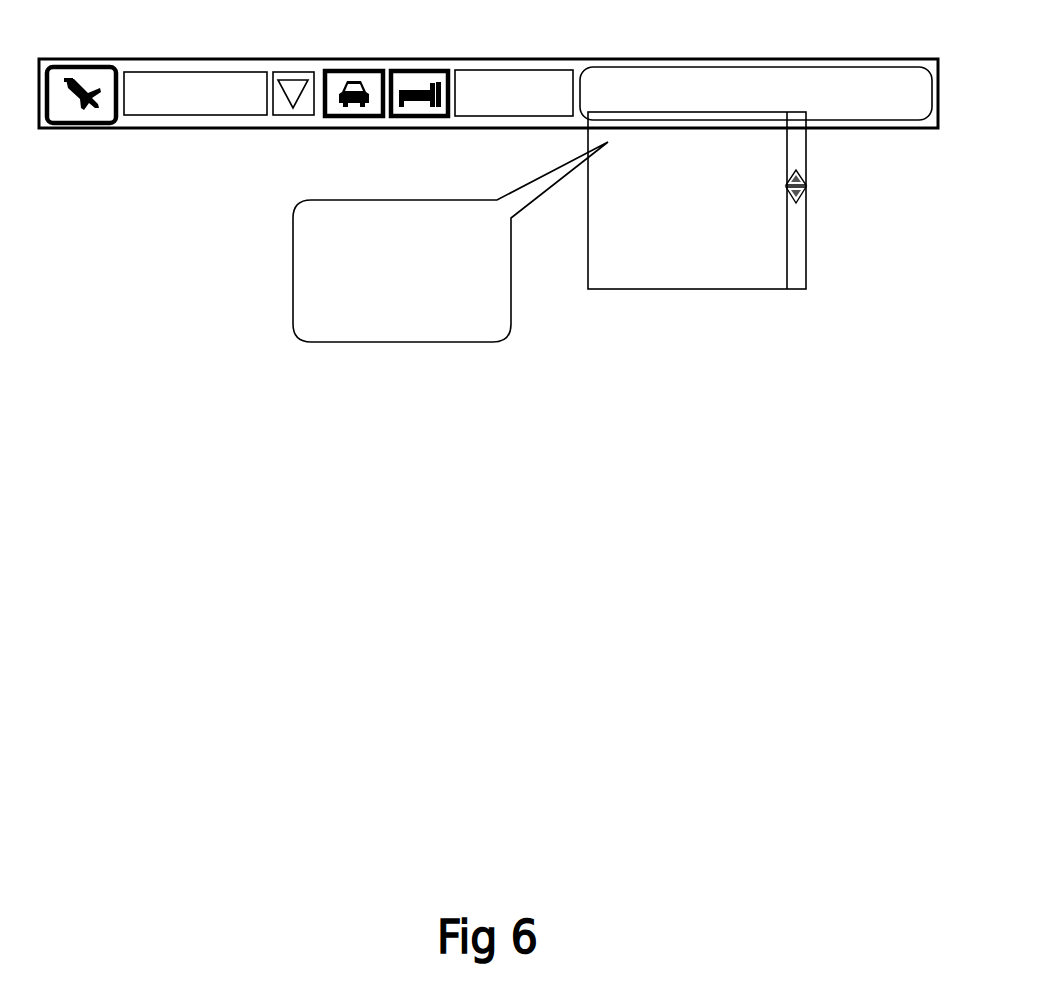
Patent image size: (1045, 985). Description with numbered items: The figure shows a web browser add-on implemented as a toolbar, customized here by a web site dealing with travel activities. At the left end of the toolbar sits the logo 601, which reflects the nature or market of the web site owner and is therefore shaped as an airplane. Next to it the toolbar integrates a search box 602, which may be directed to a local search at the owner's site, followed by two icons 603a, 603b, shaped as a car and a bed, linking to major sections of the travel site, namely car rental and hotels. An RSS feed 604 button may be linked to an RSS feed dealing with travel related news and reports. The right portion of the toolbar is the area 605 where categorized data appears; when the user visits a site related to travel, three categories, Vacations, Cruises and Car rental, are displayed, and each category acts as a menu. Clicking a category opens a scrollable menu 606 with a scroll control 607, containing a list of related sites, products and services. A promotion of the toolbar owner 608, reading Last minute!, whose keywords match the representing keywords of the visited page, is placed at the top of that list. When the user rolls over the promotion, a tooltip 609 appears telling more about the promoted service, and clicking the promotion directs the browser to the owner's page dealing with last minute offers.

The logo 601 is at (100, 65).
The search box 602 is at (197, 72).
The icon 603a is at (368, 69).
The icon 603b is at (452, 69).
The RSS feed 604 is at (530, 70).
The area 605 is at (760, 67).
The scrollable menu 606 is at (695, 289).
The scroll control 607 is at (806, 185).
The promotion of the toolbar owner 608 is at (608, 140).
The tooltip 609 is at (470, 343).